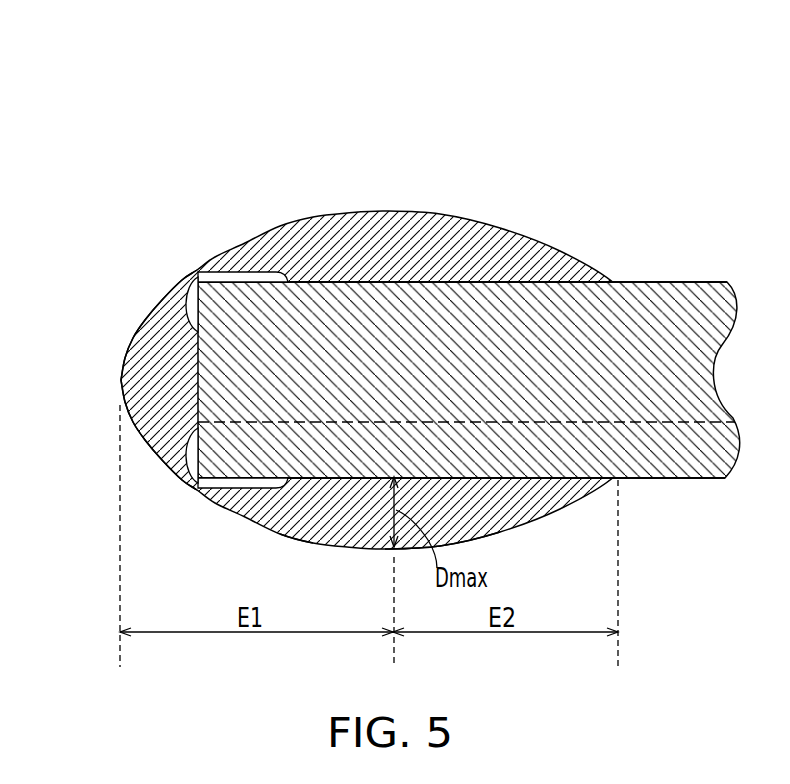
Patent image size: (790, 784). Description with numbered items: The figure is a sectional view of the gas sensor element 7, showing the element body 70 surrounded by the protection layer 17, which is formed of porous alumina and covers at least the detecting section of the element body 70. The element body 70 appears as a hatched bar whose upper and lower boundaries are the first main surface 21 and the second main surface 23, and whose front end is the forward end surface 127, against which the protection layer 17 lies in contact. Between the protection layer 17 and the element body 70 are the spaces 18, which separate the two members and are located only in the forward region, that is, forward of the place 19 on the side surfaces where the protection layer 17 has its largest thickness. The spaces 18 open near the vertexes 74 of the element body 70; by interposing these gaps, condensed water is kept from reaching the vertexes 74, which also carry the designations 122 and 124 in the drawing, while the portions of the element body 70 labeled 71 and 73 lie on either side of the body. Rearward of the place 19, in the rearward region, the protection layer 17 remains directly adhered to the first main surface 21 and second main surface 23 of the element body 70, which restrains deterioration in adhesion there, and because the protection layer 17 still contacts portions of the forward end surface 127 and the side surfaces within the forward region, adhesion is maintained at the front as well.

The gas sensor element 7 is at (365, 110).
The protection layer 17 is at (485, 230).
The spaces 18 is at (189, 403).
The place 19 is at (398, 478).
The first main surface 21 is at (632, 284).
The second main surface 23 is at (640, 478).
The element body 70 is at (469, 376).
The upper shank portion 71 is at (692, 297).
The lower shank portion 73 is at (708, 463).
The vertexes 74 is at (160, 419).
The upper contact surface 122 is at (197, 277).
The lower contact surface 124 is at (193, 486).
The forward end surface 127 is at (198, 356).